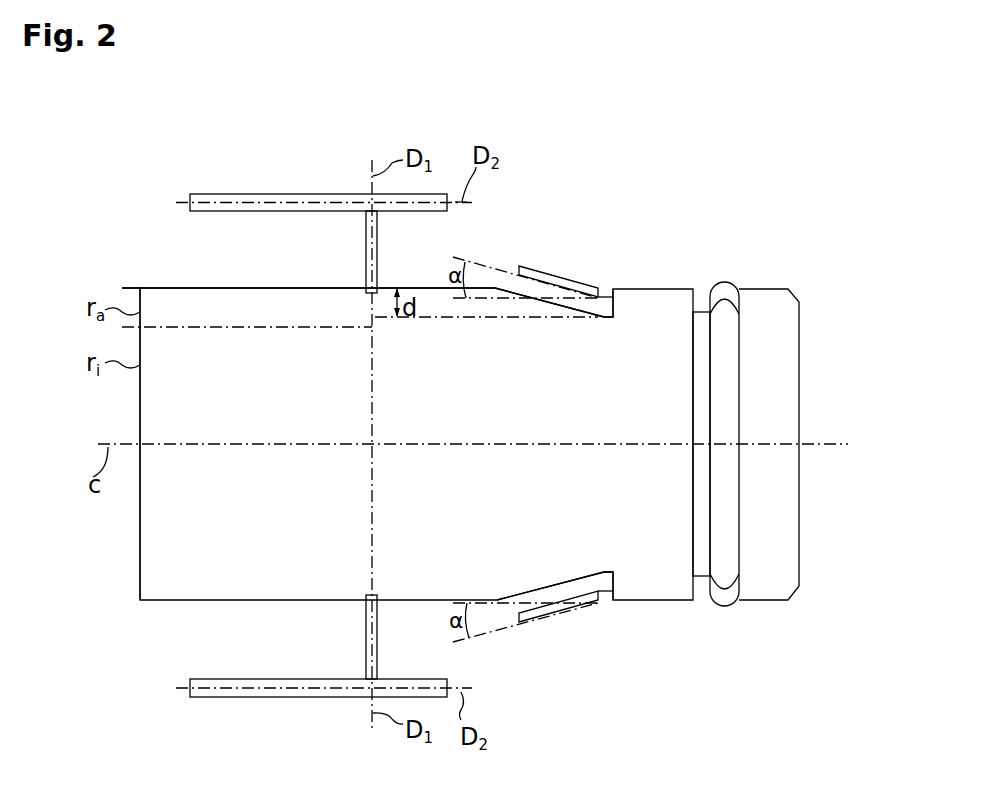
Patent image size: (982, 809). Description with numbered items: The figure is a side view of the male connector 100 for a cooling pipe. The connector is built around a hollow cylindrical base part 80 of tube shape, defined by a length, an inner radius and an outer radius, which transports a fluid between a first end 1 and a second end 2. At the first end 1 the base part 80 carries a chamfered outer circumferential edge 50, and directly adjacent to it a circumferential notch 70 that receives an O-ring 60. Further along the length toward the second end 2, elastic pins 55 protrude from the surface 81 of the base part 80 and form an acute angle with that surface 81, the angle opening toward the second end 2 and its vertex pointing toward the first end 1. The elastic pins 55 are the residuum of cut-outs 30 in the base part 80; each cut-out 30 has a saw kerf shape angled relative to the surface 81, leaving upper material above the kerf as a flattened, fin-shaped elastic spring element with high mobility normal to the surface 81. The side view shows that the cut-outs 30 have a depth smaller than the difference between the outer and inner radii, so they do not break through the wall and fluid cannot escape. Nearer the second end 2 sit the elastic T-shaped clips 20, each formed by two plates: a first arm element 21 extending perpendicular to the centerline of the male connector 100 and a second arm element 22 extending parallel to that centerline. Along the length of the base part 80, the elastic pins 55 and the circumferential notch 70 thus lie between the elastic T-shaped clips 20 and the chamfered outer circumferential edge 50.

The first end 1 is at (794, 396).
The second end 2 is at (155, 262).
The elastic T-shaped clip 20 is at (324, 447).
The first arm element 21 is at (377, 252).
The second arm element 22 is at (260, 196).
The cut-out 30 is at (578, 306).
The chamfered outer circumferential edge 50 is at (797, 300).
The elastic pin 55 is at (540, 268).
The O-ring 60 is at (725, 278).
The circumferential notch 70 is at (702, 283).
The hollow cylindrical base part 80 is at (528, 436).
The surface 81 is at (243, 305).
The male connector 100 is at (759, 359).